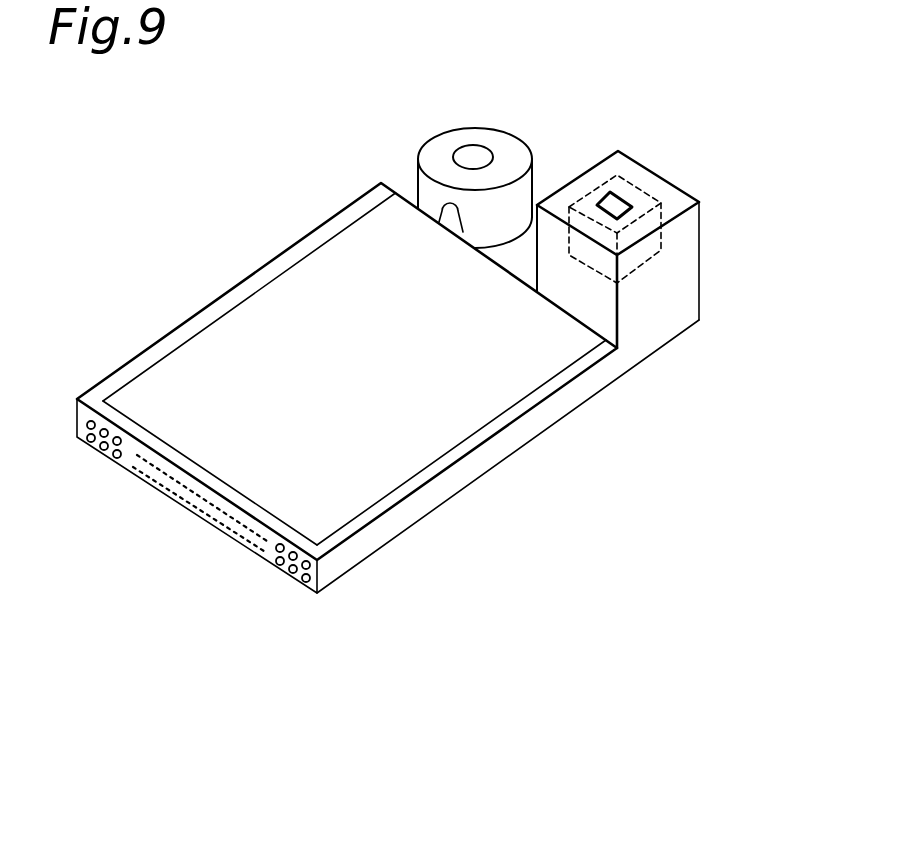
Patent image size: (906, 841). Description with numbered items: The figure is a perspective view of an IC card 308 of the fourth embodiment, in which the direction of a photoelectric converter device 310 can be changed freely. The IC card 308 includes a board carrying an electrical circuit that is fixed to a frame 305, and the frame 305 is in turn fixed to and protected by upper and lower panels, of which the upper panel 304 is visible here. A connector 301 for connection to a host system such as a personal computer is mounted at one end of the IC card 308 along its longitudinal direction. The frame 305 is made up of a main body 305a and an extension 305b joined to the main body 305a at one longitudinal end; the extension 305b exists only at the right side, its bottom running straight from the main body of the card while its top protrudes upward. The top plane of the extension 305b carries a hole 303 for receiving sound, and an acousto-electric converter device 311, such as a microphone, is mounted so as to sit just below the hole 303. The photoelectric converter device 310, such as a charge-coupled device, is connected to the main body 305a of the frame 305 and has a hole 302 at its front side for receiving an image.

The connector 301 is at (292, 577).
The hole 302 is at (482, 160).
The hole 303 is at (621, 198).
The upper panel 304 is at (498, 370).
The frame 305 is at (516, 477).
The main body 305a is at (422, 523).
The extension 305b is at (640, 335).
The IC card 308 is at (188, 266).
The photoelectric converter device 310 is at (433, 150).
The acousto-electric converter device 311 is at (675, 273).